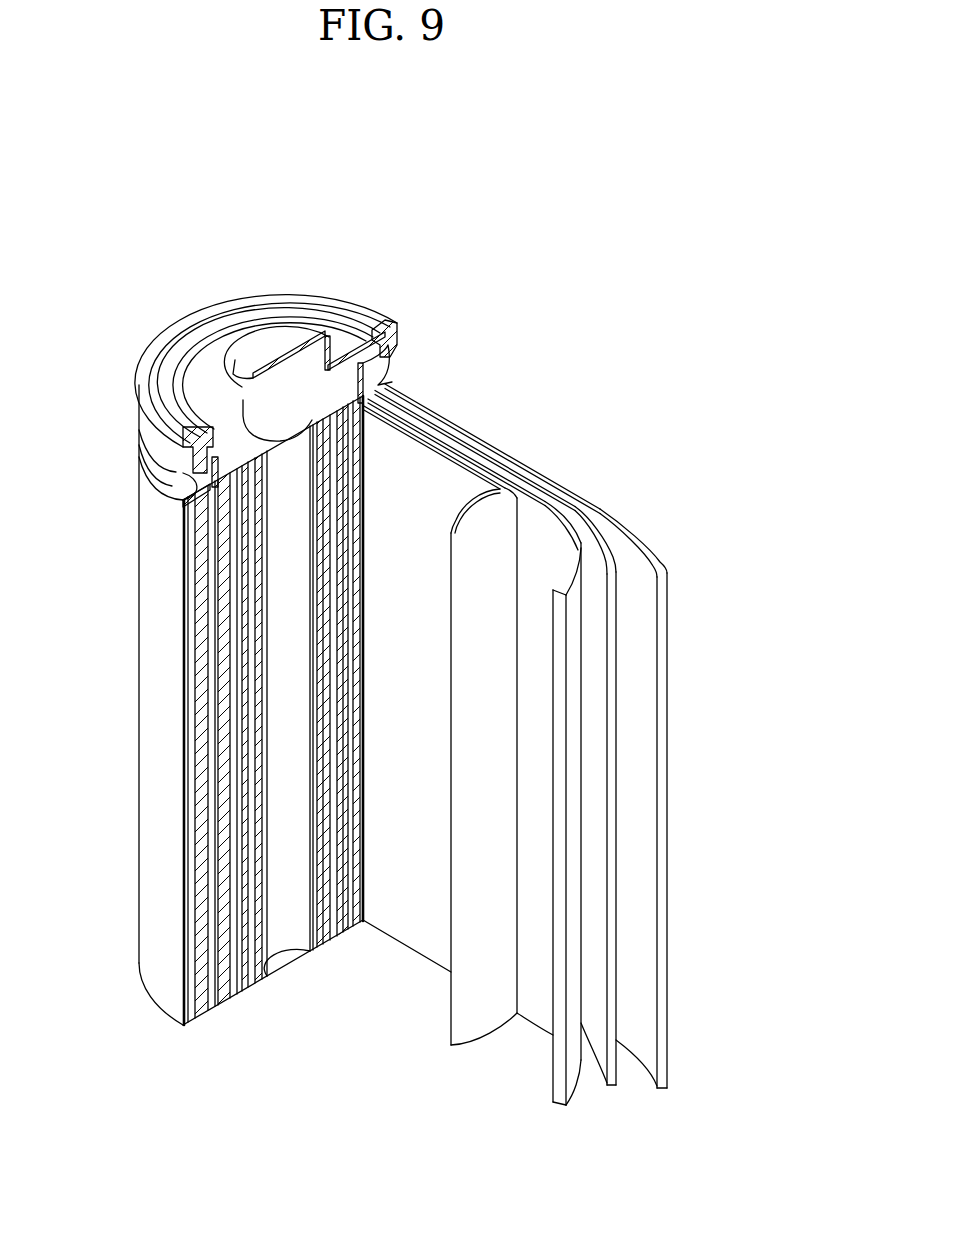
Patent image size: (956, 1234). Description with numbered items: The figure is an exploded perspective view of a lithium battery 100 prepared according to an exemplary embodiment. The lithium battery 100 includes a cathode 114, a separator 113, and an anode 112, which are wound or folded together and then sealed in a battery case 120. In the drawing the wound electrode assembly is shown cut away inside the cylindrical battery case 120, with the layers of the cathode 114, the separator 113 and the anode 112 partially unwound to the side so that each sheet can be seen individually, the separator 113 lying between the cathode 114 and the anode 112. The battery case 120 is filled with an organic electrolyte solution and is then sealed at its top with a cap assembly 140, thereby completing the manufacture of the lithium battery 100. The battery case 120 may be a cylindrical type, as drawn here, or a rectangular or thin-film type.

The lithium battery 100 is at (579, 313).
The anode 112 is at (652, 553).
The separator 113 is at (480, 533).
The cathode 114 is at (542, 510).
The battery case 120 is at (150, 708).
The cap assembly 140 is at (260, 338).